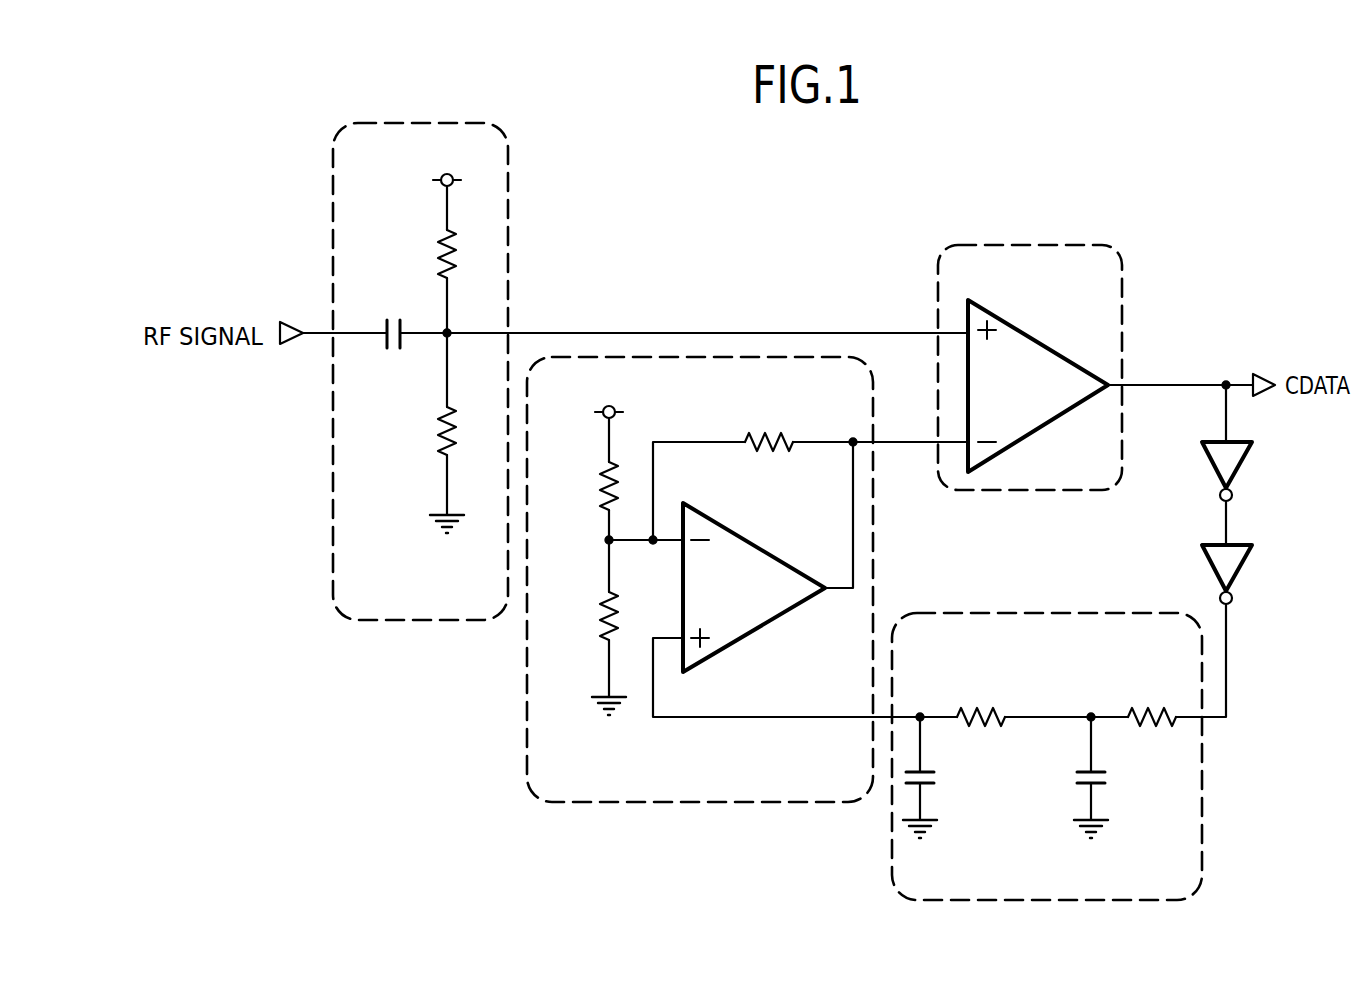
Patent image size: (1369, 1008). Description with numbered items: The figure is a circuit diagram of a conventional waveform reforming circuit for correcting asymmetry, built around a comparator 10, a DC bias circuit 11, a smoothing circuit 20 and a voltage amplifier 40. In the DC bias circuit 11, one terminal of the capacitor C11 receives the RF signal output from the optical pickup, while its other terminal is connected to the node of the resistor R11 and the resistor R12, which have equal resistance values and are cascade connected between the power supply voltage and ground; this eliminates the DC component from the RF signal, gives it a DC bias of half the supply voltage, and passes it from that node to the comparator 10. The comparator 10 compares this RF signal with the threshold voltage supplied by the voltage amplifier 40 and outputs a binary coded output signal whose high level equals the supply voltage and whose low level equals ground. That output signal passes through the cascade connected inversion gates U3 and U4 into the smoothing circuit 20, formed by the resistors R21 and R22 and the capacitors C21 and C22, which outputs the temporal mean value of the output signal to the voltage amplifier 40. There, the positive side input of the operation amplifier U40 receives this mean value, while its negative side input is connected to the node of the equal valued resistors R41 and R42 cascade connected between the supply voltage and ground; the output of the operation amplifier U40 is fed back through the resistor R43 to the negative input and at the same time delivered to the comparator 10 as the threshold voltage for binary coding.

The comparator 10 is at (938, 276).
The DC bias circuit 11 is at (333, 590).
The smoothing circuit 20 is at (892, 879).
The voltage amplifier 40 is at (527, 782).
The resistor R11 is at (437, 255).
The resistor R12 is at (437, 435).
The capacitor C11 is at (394, 352).
The resistor R41 is at (598, 487).
The resistor R42 is at (598, 617).
The resistor R43 is at (762, 432).
The operation amplifier U40 is at (752, 542).
The inversion gate U3 is at (1240, 468).
The inversion gate U4 is at (1240, 571).
The resistor R21 is at (1152, 704).
The resistor R22 is at (981, 704).
The capacitor C21 is at (1113, 779).
The capacitor C22 is at (942, 779).